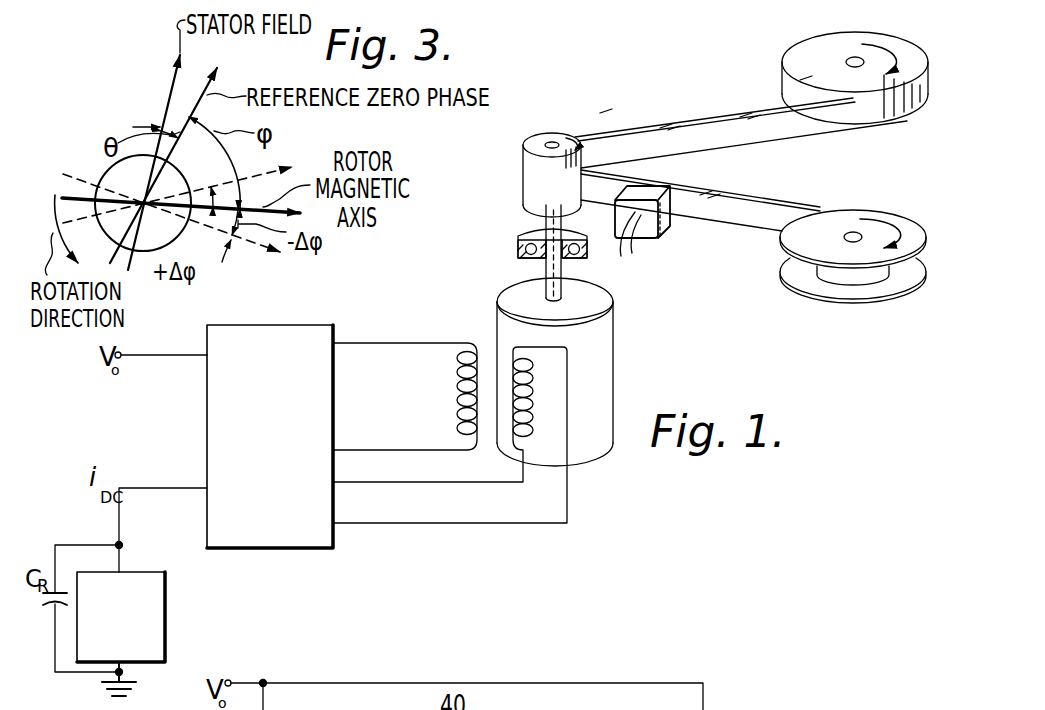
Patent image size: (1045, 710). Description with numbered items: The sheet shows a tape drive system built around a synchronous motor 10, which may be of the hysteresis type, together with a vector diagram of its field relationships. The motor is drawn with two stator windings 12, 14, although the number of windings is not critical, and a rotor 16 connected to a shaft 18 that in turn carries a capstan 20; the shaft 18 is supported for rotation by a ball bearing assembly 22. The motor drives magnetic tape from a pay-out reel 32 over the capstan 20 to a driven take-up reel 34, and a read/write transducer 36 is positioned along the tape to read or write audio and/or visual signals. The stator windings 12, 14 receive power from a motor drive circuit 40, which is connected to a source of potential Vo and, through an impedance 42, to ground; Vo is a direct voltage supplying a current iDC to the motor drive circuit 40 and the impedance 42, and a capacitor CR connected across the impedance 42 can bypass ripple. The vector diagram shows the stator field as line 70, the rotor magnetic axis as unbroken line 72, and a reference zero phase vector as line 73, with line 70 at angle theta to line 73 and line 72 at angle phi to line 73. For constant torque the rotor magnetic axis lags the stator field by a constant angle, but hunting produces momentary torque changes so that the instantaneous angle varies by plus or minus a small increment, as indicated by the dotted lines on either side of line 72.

In FIG. 1, the synchronous motor 10 is at (478, 566).
In FIG. 1, the stator winding 12 is at (466, 348).
In FIG. 1, the stator winding 14 is at (568, 485).
In FIG. 1, the rotor 16 is at (600, 343).
In FIG. 1, the shaft 18 is at (546, 268).
In FIG. 1, the capstan 20 is at (541, 138).
In FIG. 1, the ball bearing assembly 22 is at (532, 228).
In FIG. 1, the pay-out reel 32 is at (805, 52).
In FIG. 1, the take-up reel 34 is at (888, 218).
In FIG. 1, the read/write transducer 36 is at (668, 224).
In FIG. 1, the motor drive circuit 40 is at (295, 532).
In FIG. 1, the impedance 42 is at (152, 605).
In FIG. 3, the stator field line 70 is at (177, 73).
In FIG. 3, the rotor magnetic axis line 72 is at (305, 214).
In FIG. 3, the reference zero phase vector line 73 is at (220, 73).